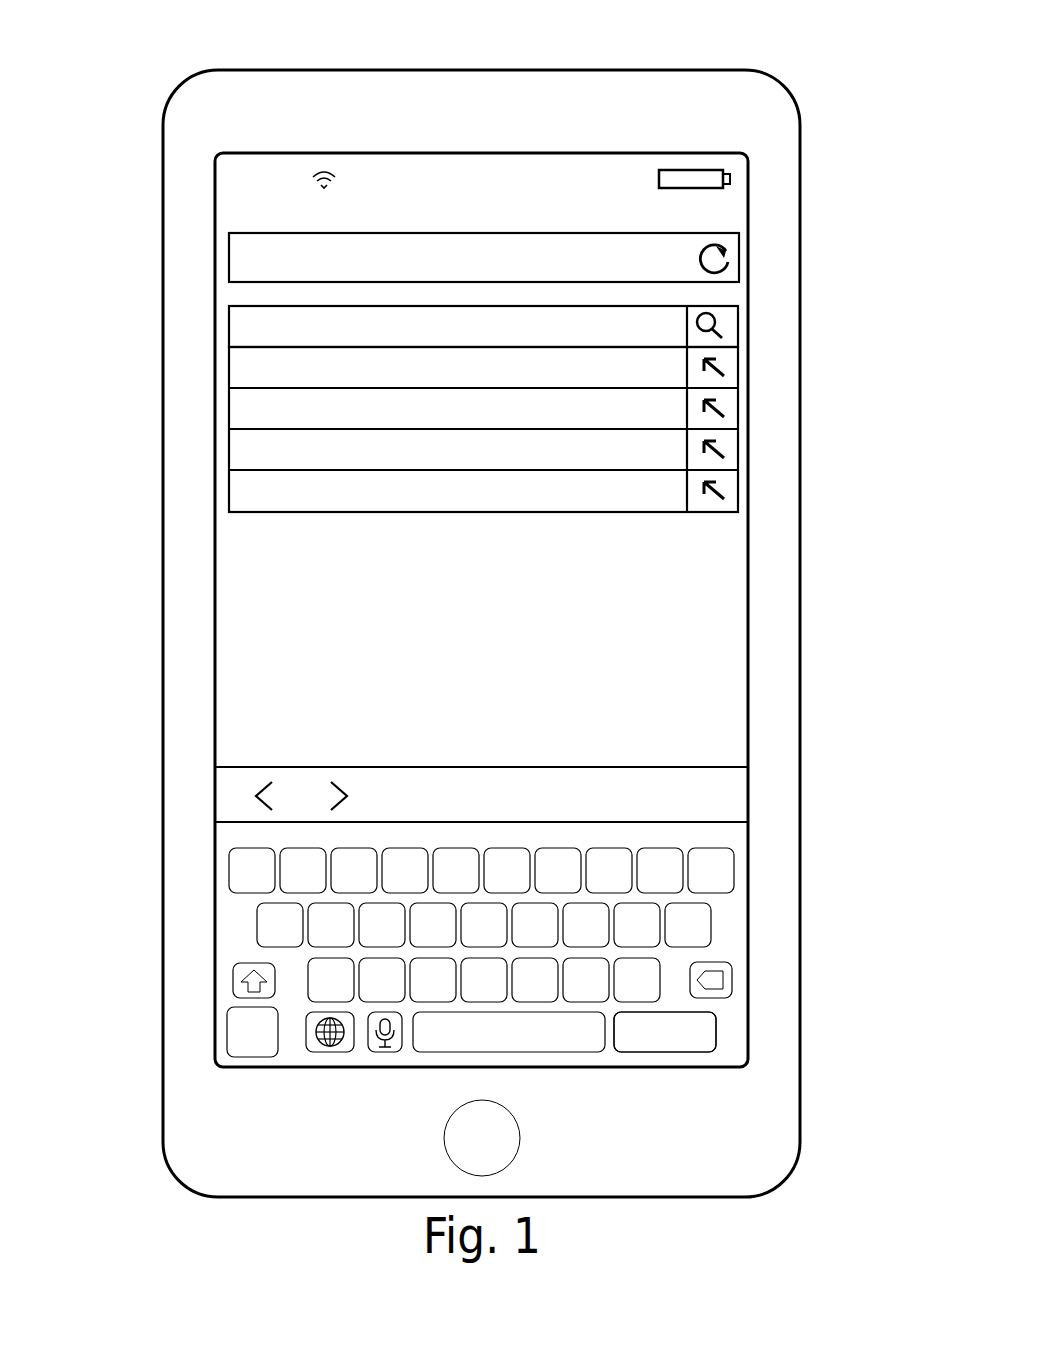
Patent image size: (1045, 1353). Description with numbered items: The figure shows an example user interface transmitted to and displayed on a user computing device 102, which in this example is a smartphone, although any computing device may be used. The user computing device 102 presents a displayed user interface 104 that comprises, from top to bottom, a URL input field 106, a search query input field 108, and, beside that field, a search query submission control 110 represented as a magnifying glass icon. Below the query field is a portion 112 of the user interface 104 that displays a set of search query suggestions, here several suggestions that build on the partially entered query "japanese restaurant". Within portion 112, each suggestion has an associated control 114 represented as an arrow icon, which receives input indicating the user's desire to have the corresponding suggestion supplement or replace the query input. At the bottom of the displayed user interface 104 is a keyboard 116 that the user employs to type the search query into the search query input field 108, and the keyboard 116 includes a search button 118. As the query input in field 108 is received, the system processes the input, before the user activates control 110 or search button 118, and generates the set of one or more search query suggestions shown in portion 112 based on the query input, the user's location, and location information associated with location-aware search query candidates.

The user computing device 102 is at (517, 57).
The displayed user interface 104 is at (653, 152).
The URL input field 106 is at (228, 258).
The search query input field 108 is at (228, 326).
The search query submission control 110 is at (723, 328).
The portion displaying a set of search query suggestions 112 is at (236, 512).
The control 114 is at (725, 368).
The keyboard 116 is at (735, 1077).
The search button 118 is at (633, 1046).